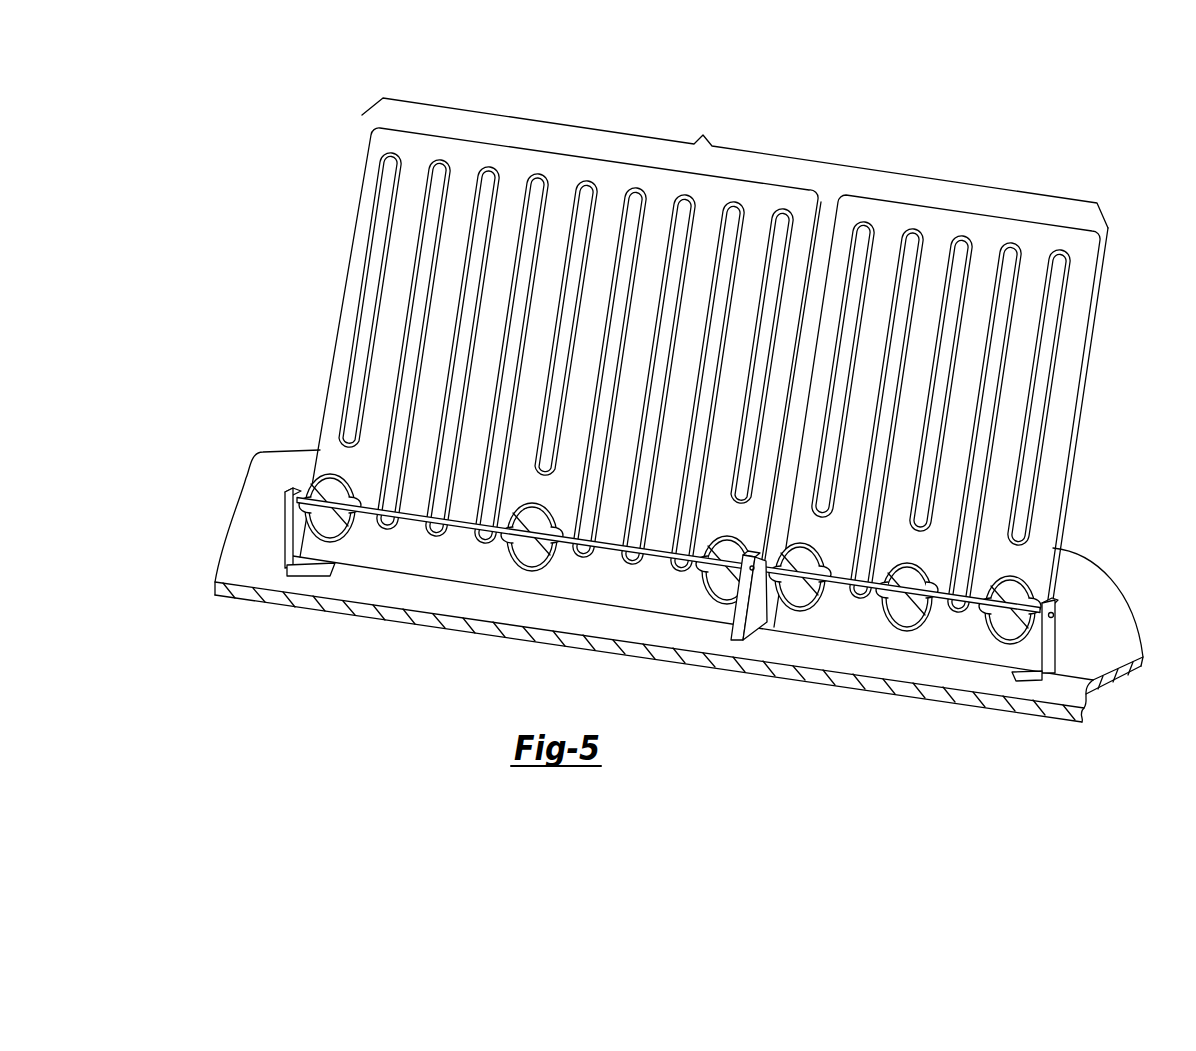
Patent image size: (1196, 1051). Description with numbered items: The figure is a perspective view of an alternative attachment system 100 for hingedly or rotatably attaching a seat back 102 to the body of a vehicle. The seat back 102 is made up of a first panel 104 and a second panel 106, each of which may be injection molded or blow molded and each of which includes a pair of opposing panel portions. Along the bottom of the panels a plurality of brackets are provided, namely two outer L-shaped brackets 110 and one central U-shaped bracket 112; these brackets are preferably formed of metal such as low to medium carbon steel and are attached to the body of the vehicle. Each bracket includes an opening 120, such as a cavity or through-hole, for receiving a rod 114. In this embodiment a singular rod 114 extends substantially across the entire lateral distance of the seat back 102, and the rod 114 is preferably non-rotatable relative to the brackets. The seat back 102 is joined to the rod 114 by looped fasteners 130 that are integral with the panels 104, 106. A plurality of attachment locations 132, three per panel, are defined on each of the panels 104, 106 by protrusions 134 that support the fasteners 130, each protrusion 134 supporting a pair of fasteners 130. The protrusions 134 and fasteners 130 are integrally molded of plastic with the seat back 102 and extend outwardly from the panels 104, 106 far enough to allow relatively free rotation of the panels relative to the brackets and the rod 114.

The attachment system 100 is at (669, 405).
The seat back 102 is at (707, 340).
The first panel 104 is at (563, 108).
The second panel 106 is at (1044, 186).
The L-shaped bracket 110 is at (285, 538).
The U-shaped bracket 112 is at (759, 626).
The rod 114 is at (412, 520).
The opening 120 is at (646, 608).
The looped fastener 130 is at (346, 501).
The attachment location 132 is at (312, 533).
The protrusion 134 is at (326, 530).